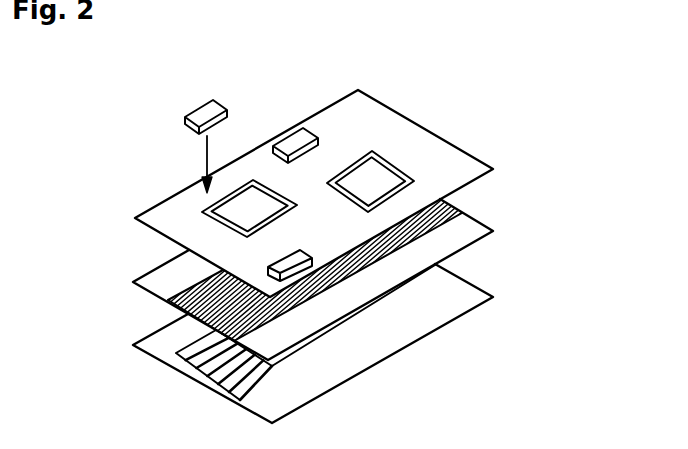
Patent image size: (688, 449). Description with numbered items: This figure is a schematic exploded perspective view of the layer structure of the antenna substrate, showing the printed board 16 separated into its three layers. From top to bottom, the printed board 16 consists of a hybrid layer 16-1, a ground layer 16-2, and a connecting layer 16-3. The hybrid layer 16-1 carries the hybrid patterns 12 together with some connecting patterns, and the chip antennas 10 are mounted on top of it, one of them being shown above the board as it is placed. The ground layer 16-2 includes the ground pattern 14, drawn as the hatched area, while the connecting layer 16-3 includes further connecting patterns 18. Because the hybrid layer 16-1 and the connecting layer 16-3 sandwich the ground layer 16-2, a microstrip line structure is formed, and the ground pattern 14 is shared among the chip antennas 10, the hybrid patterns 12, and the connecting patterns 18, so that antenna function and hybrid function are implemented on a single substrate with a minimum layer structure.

The chip antenna 10 is at (218, 101).
The hybrid pattern 12 is at (390, 162).
The ground pattern 14 is at (188, 286).
The printed board 16 is at (558, 115).
The hybrid layer 16-1 is at (465, 169).
The ground layer 16-2 is at (465, 232).
The connecting layer 16-3 is at (465, 292).
The connecting pattern 18 is at (177, 360).